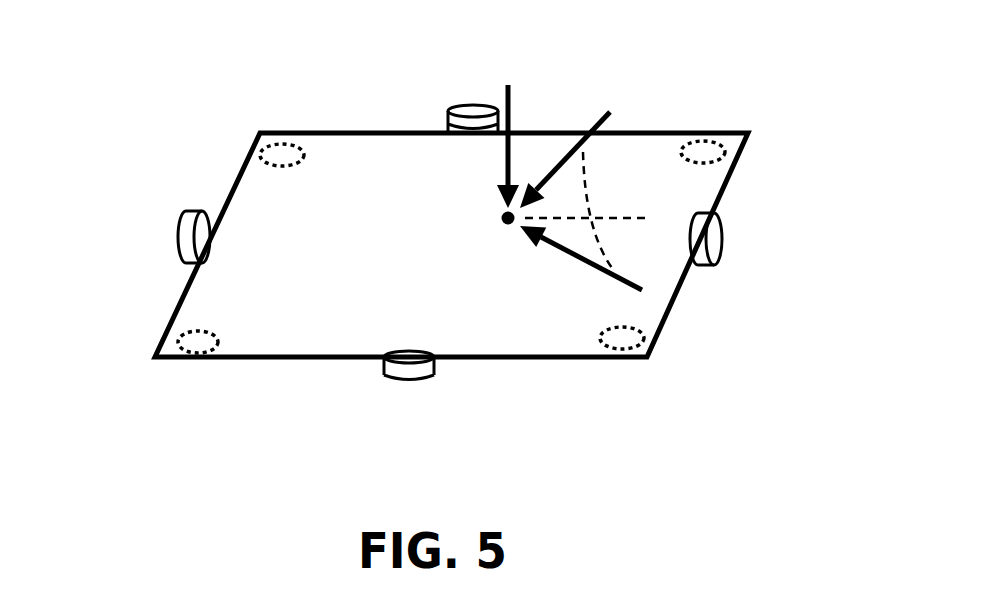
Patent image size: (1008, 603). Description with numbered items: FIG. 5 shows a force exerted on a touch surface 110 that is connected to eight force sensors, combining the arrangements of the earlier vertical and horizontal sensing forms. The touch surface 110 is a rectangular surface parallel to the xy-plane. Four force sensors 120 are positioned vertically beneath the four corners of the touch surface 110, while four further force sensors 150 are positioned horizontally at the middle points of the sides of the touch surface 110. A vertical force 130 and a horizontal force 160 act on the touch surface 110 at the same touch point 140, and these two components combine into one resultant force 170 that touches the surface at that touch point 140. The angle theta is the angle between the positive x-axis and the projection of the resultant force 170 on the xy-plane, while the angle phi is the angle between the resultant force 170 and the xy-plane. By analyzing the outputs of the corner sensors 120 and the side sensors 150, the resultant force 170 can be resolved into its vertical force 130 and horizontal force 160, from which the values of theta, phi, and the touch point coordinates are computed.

The touch surface 110 is at (260, 190).
The force sensors 120 is at (280, 142).
The vertical force 130 is at (512, 98).
The touch point 140 is at (495, 213).
The force sensors 150 is at (448, 110).
The horizontal force 160 is at (557, 253).
The resultant force 170 is at (605, 117).